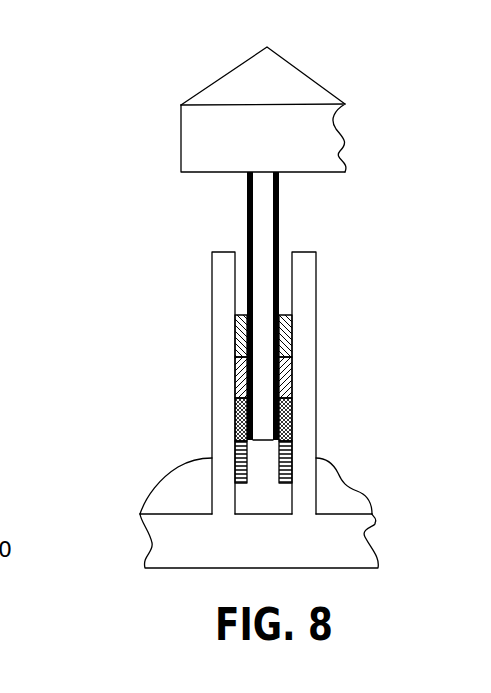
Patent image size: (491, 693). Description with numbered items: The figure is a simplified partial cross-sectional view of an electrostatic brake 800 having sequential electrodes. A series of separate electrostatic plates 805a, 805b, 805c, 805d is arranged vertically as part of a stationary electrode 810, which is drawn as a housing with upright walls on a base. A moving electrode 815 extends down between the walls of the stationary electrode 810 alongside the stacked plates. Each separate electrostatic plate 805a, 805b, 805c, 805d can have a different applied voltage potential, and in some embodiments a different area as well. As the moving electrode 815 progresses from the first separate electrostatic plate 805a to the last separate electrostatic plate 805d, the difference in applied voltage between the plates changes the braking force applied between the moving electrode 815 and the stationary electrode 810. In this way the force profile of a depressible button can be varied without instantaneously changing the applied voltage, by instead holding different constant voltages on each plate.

The electrostatic brake 800 is at (93, 181).
The first separate electrostatic plate 805a is at (240, 332).
The separate electrostatic plate 805b is at (240, 359).
The separate electrostatic plate 805c is at (235, 405).
The last separate electrostatic plate 805d is at (240, 461).
The stationary electrode 810 is at (316, 368).
The moving electrode 815 is at (260, 218).